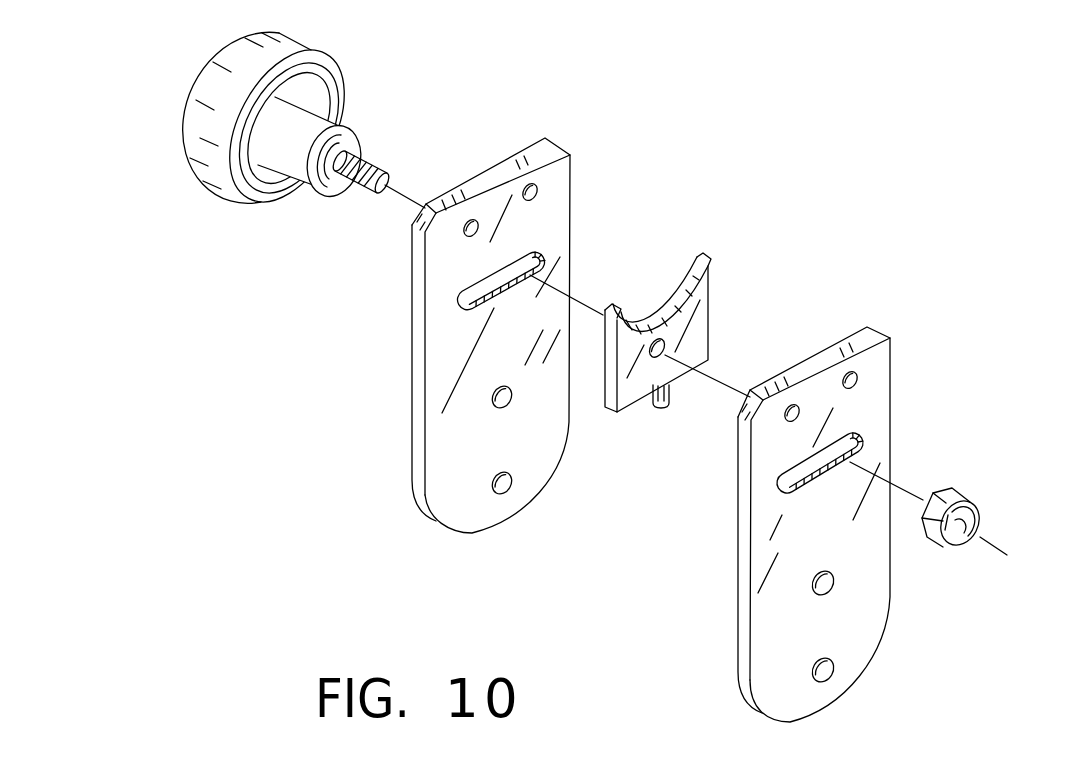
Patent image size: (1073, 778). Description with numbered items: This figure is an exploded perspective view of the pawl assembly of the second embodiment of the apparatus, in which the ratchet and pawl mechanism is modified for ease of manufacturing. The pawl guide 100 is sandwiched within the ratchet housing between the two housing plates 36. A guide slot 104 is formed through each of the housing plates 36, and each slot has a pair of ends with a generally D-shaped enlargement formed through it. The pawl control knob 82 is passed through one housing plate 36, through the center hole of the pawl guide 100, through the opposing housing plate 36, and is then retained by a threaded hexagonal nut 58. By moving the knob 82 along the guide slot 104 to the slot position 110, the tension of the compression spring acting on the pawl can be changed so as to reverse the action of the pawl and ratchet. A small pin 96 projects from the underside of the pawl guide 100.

The pawl control knob 82 is at (323, 118).
The housing plates 36 is at (500, 310).
The guide slot 104 is at (500, 278).
The slot position 110 is at (543, 252).
The pawl guide 100 is at (697, 350).
The pin 96 is at (662, 408).
The threaded hexagonal nut 58 is at (955, 495).